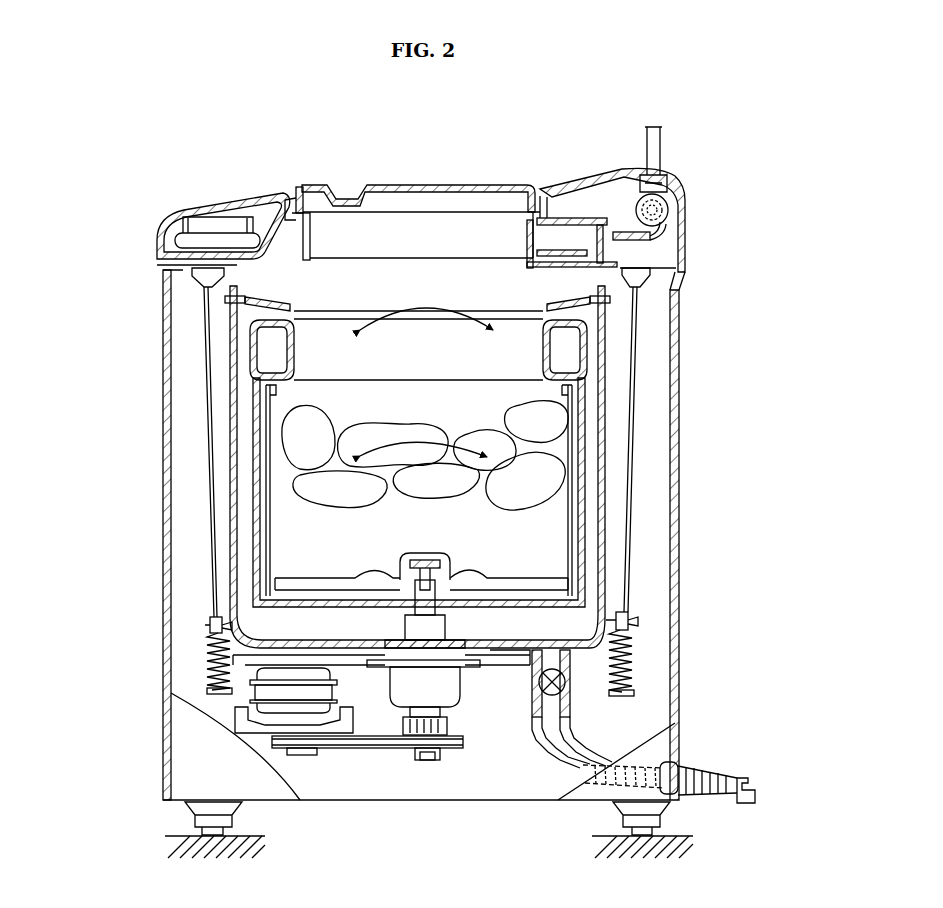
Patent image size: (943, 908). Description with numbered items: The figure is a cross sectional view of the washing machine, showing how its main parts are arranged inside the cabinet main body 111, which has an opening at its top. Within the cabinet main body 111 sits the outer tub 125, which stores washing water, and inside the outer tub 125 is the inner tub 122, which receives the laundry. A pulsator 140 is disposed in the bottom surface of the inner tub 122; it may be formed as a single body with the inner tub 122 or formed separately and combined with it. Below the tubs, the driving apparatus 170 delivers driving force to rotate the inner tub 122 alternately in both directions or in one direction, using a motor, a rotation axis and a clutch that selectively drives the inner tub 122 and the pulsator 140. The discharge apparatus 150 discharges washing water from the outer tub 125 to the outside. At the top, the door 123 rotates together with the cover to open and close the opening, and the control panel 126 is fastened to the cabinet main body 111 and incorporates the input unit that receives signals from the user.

The cabinet main body 111 is at (163, 336).
The inner tub 122 is at (253, 418).
The door 123 is at (463, 183).
The outer tub 125 is at (235, 512).
The control panel 126 is at (596, 189).
The pulsator 140 is at (460, 562).
The discharge apparatus 150 is at (570, 675).
The driving apparatus 170 is at (267, 692).